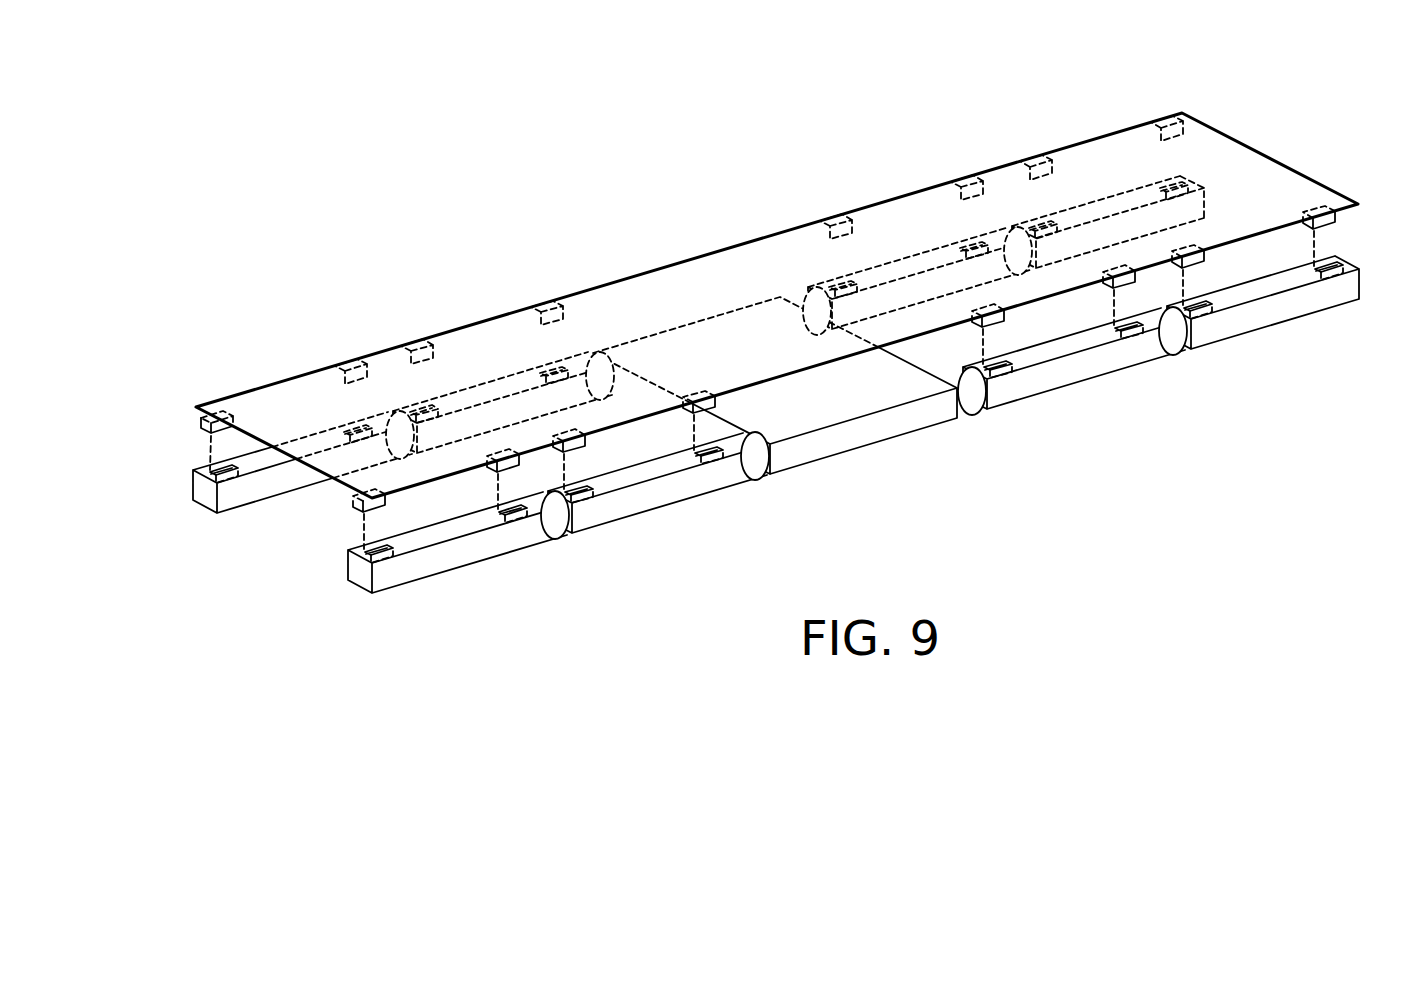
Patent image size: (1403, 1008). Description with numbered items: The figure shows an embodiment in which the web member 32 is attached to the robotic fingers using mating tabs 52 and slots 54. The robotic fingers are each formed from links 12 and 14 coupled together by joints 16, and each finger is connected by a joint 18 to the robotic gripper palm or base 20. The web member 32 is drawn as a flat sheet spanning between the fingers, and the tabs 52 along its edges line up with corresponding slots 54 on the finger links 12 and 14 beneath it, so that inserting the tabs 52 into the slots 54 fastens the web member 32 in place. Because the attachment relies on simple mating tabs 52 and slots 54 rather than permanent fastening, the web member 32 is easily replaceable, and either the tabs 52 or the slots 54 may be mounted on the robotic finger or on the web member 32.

The link 12 is at (232, 508).
The link 14 is at (507, 377).
The joint 16 is at (388, 418).
The joint 18 is at (591, 362).
The robotic gripper palm or base 20 is at (866, 448).
The web member 32 is at (1262, 155).
The tab 52 is at (218, 422).
The slot 54 is at (212, 472).